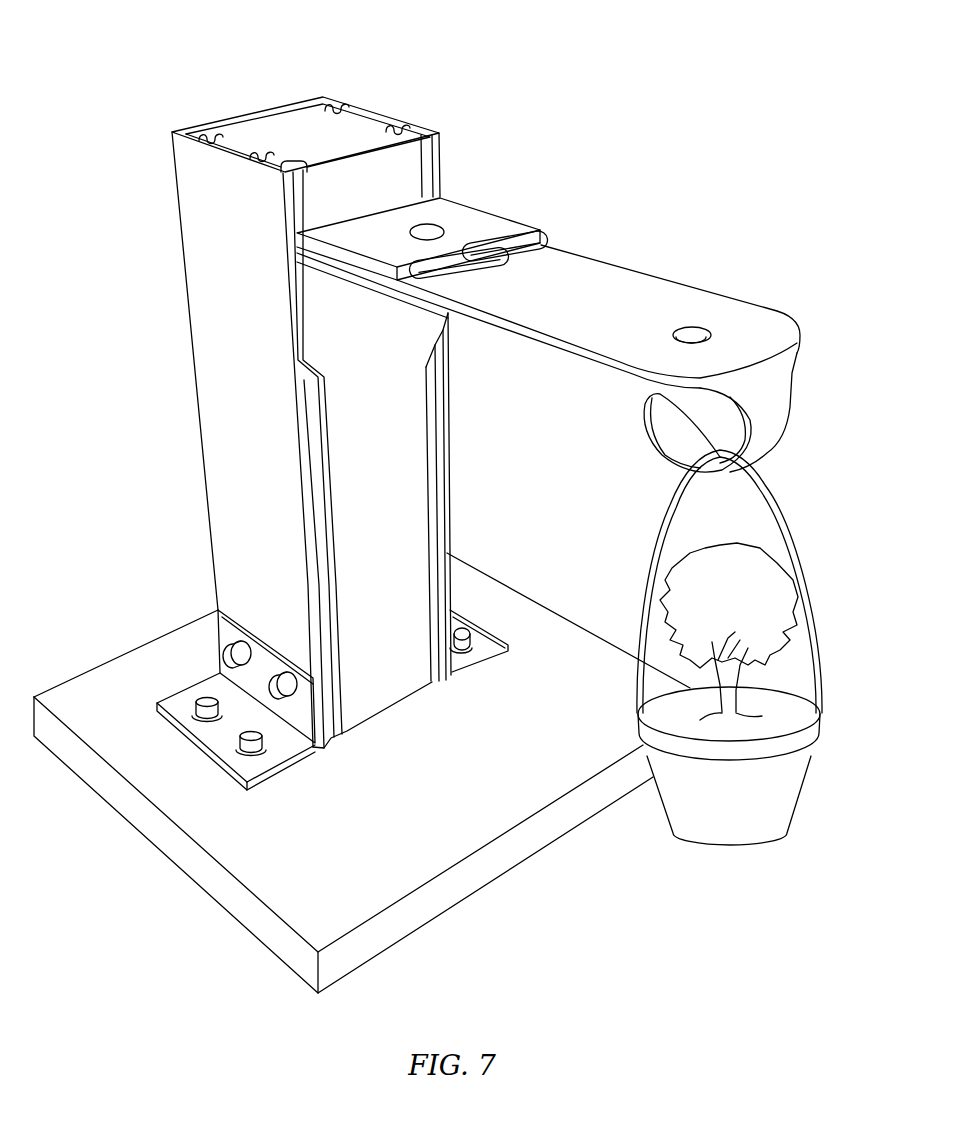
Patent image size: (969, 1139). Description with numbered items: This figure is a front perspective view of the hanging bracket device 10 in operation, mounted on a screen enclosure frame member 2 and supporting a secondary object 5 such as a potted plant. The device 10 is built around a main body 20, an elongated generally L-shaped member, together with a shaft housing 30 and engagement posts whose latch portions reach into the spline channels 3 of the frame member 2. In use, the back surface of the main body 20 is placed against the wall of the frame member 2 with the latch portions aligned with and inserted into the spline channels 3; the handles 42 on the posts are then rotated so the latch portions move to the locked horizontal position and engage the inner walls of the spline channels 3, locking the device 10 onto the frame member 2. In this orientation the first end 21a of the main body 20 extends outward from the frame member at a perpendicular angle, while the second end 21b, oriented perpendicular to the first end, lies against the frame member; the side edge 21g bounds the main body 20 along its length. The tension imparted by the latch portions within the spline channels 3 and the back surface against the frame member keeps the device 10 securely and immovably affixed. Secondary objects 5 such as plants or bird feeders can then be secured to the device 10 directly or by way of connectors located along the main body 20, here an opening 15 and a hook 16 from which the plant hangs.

The device 10 is at (140, 86).
The screen enclosure frame member 2 is at (370, 531).
The spline channels 3 is at (317, 498).
The secondary objects 5 is at (793, 527).
The openings 15 is at (698, 328).
The hooks 16 is at (648, 447).
The main body 20 is at (680, 272).
The first end 21a is at (768, 362).
The second end 21b is at (447, 405).
The side edge 21g is at (187, 322).
The shaft housing 30 is at (420, 127).
The handle 42 is at (462, 250).